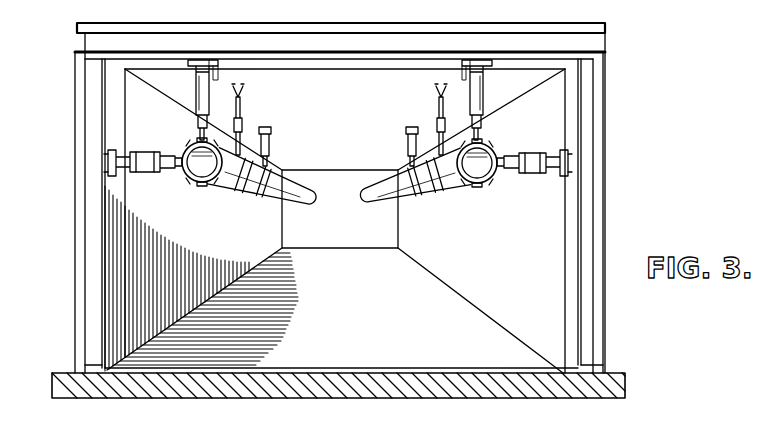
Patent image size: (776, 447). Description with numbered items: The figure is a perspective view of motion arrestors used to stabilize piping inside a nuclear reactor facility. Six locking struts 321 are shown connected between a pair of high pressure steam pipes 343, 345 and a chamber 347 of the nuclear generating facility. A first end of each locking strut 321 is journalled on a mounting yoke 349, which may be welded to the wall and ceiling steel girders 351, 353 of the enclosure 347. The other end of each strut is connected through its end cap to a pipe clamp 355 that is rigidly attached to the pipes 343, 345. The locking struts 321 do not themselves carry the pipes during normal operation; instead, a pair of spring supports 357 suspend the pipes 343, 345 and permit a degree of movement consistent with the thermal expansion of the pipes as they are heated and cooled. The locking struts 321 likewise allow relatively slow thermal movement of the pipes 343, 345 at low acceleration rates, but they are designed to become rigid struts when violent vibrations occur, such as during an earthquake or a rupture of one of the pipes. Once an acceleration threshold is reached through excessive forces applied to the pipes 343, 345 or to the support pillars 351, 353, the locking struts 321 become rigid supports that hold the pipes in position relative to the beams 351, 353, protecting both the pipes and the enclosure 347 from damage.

The locking strut 321 is at (189, 101).
The high pressure steam pipe 343 is at (233, 182).
The high pressure steam pipe 345 is at (430, 186).
The chamber 347 is at (545, 228).
The mounting yoke 349 is at (478, 186).
The wall steel girder 351 is at (587, 133).
The ceiling steel girder 353 is at (588, 47).
The pipe clamp 355 is at (200, 184).
The spring support 357 is at (244, 110).